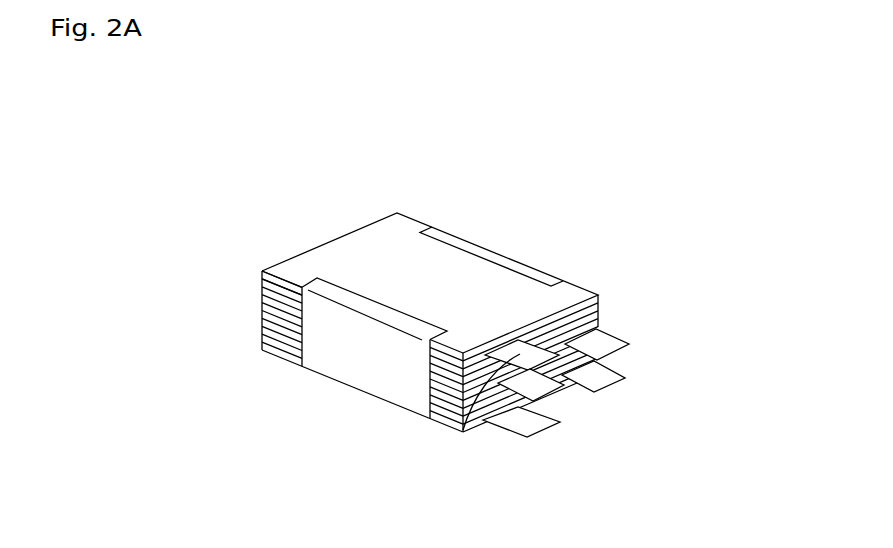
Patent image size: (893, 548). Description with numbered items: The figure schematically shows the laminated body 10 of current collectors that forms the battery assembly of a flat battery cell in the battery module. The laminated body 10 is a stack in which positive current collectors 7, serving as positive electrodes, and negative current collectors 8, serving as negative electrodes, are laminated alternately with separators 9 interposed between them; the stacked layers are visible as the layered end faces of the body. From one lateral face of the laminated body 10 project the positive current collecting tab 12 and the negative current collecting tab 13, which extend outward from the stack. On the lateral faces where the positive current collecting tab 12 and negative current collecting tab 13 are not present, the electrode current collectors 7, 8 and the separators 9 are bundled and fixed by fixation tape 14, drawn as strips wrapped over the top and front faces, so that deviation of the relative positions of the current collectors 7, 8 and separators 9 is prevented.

The laminated body 10 is at (340, 238).
The positive current collector 7 is at (262, 272).
The negative current collector 8 is at (262, 285).
The separator 9 is at (262, 277).
The positive current collecting tab 12 is at (605, 342).
The negative current collecting tab 13 is at (463, 430).
The fixation tape 14 is at (500, 258).